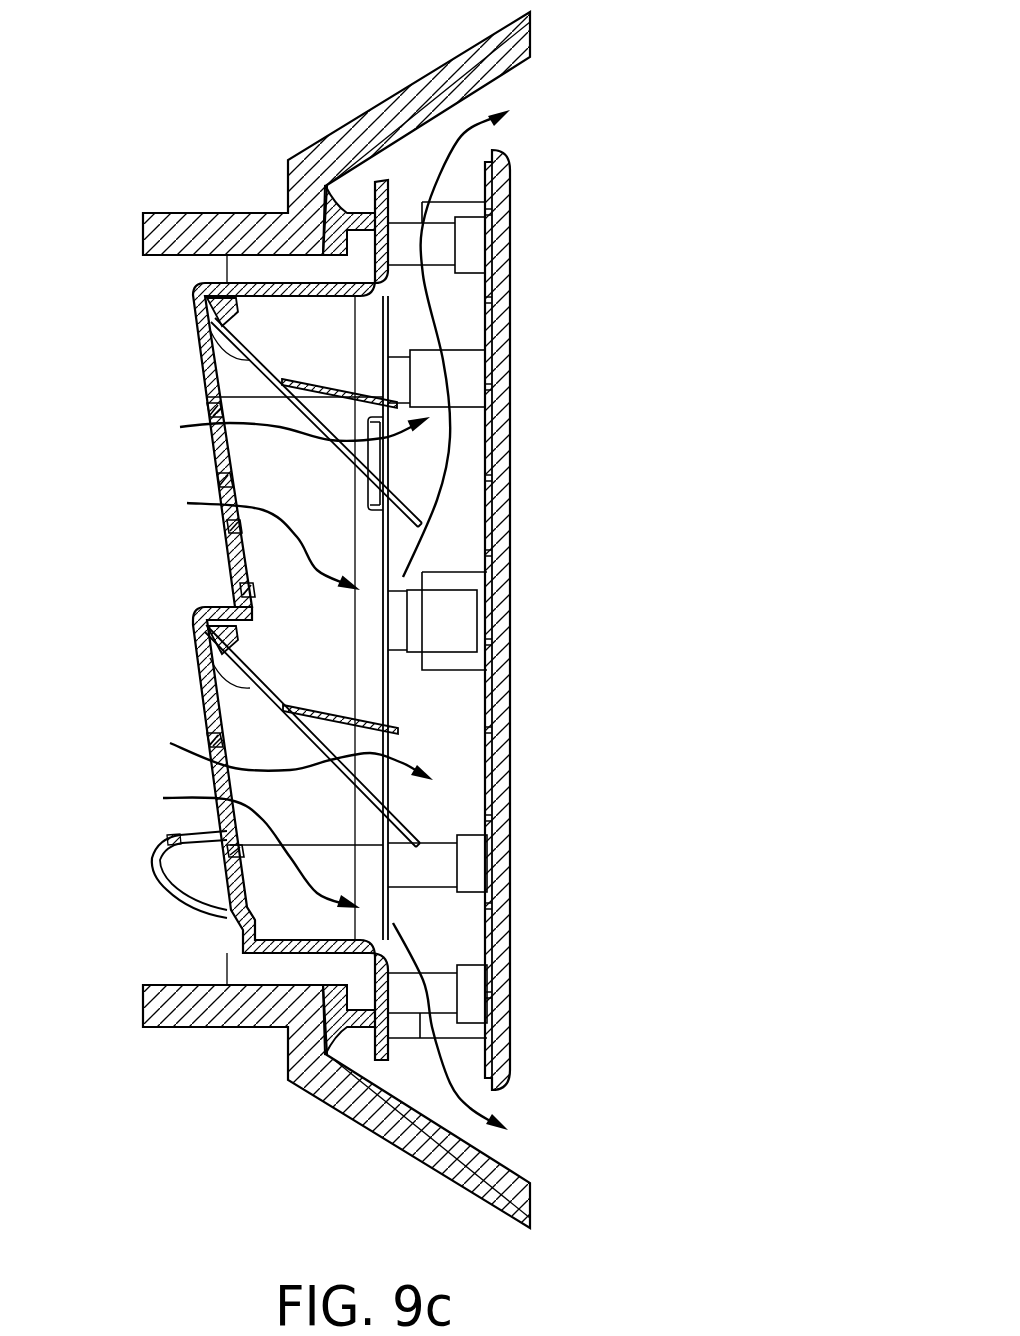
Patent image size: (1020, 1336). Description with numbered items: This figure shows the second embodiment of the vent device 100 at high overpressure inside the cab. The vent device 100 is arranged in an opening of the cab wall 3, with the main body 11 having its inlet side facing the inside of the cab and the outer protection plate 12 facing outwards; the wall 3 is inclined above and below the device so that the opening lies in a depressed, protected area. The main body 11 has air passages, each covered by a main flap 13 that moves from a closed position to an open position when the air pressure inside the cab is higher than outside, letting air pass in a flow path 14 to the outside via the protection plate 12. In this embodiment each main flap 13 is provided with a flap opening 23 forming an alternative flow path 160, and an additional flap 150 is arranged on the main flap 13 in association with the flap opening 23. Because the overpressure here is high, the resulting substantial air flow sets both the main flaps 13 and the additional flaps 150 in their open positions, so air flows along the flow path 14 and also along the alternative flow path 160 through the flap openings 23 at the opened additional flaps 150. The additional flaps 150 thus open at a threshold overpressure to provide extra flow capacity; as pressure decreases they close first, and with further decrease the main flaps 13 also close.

The vent device 100 is at (658, 83).
The cab wall 3 is at (410, 110).
The main body 11 is at (165, 885).
The outer protection plate 12 is at (510, 943).
The main flap 13 is at (215, 324).
The flow path 14 is at (198, 503).
The flap opening 23 is at (347, 435).
The additional flap 150 is at (353, 398).
The alternative flow path 160 is at (193, 423).